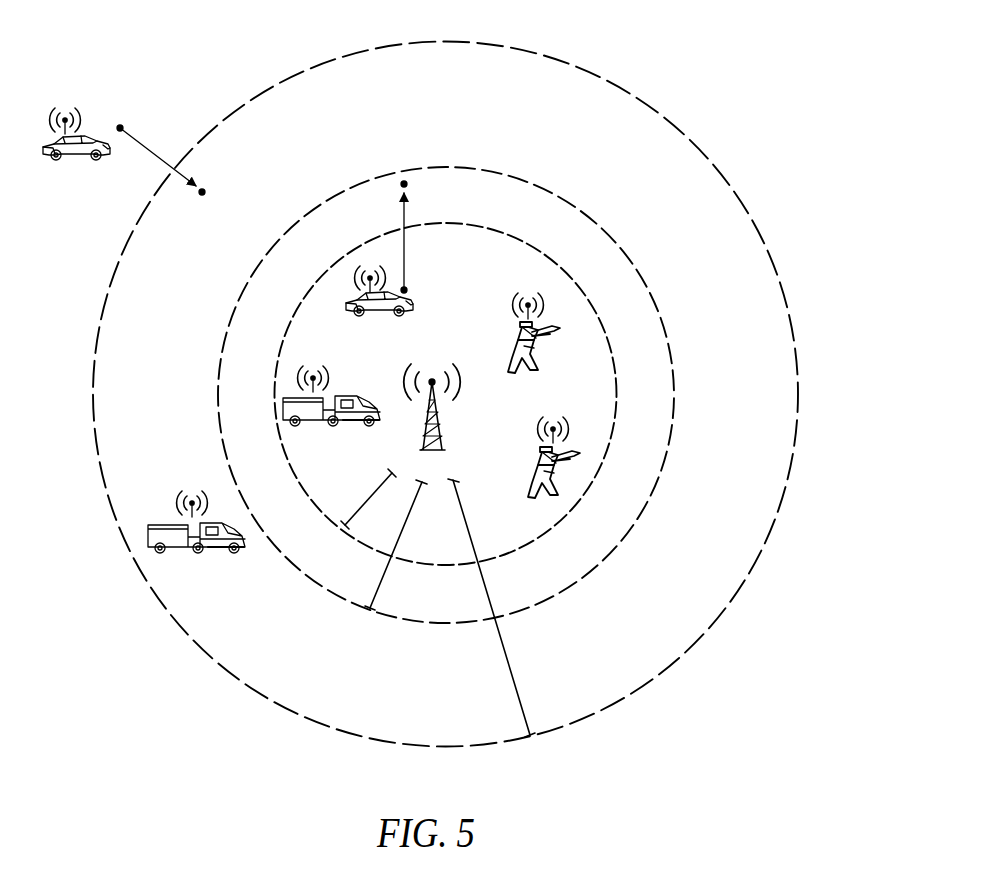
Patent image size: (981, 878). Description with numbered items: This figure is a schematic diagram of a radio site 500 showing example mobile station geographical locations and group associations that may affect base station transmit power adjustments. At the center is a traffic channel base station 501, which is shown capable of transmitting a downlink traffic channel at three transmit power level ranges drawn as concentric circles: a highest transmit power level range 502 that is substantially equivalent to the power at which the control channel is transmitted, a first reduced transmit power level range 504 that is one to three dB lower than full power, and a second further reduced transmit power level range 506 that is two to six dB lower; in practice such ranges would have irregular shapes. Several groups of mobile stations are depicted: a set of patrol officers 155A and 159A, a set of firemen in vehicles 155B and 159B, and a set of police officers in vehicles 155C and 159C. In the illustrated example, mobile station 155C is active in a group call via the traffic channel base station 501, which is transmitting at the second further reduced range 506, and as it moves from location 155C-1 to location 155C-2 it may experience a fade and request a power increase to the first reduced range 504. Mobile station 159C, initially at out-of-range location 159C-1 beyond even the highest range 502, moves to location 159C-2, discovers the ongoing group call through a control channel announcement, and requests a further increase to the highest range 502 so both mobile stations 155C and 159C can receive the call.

The radio site 500 is at (106, 29).
The traffic channel base station 501 is at (423, 418).
The highest transmit power level range 502 is at (501, 640).
The first reduced transmit power level range 504 is at (400, 534).
The second further reduced transmit power level range 506 is at (360, 507).
The mobile station 155A is at (508, 380).
The mobile station 155B is at (330, 428).
The mobile station 155C is at (368, 325).
The location 155C-1 is at (404, 290).
The location 155C-2 is at (404, 184).
The mobile station 159A is at (532, 485).
The mobile station 159B is at (197, 555).
The mobile station 159C is at (60, 166).
The out-of-range location 159C-1 is at (120, 128).
The location 159C-2 is at (202, 192).